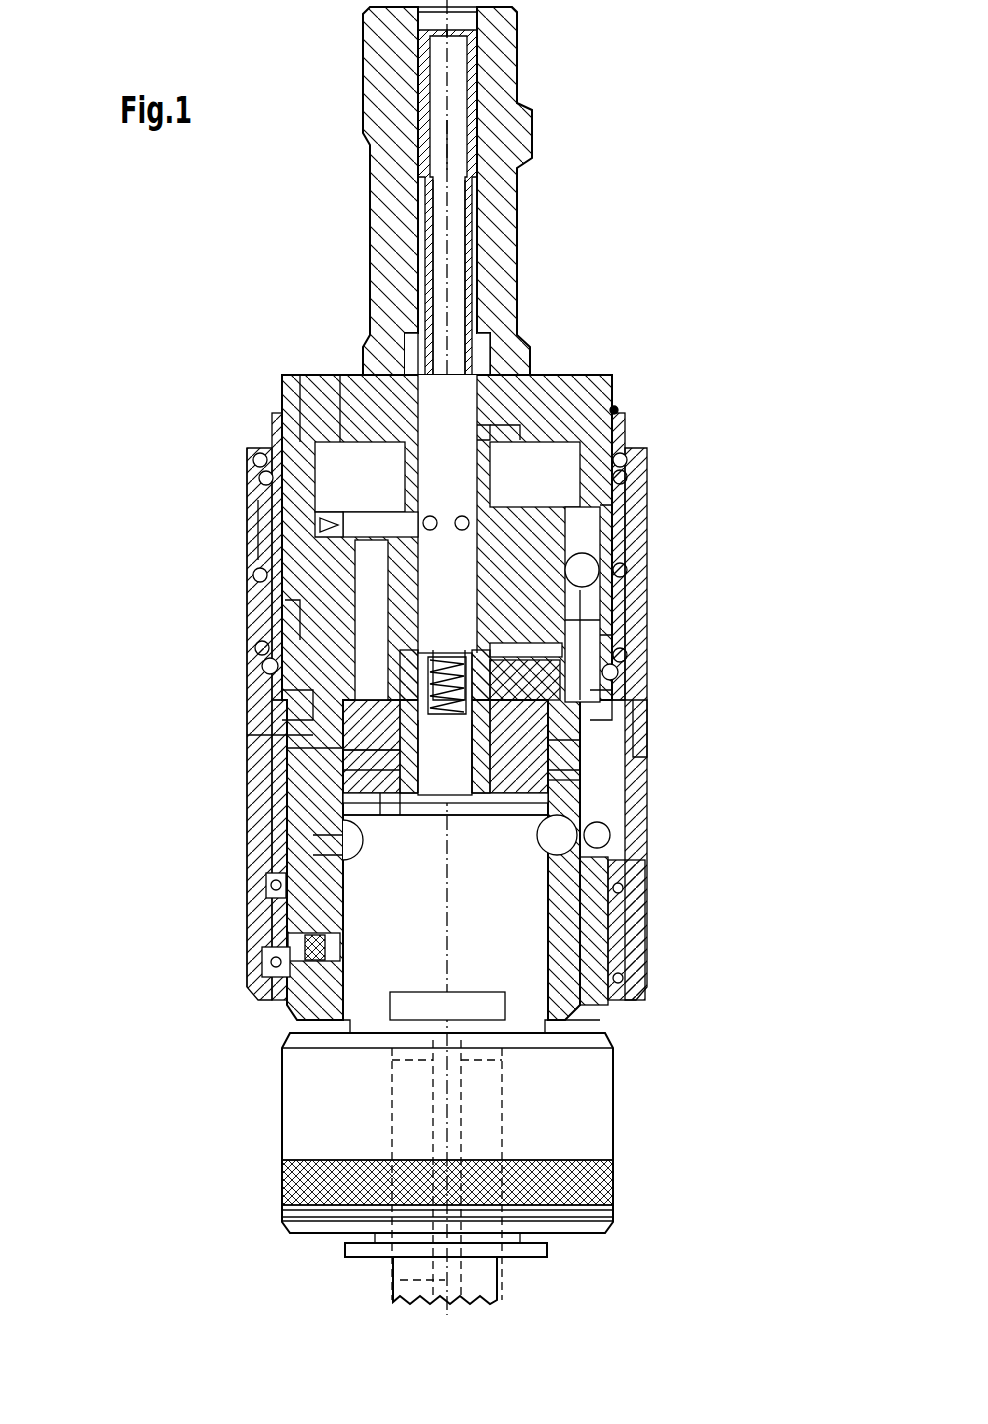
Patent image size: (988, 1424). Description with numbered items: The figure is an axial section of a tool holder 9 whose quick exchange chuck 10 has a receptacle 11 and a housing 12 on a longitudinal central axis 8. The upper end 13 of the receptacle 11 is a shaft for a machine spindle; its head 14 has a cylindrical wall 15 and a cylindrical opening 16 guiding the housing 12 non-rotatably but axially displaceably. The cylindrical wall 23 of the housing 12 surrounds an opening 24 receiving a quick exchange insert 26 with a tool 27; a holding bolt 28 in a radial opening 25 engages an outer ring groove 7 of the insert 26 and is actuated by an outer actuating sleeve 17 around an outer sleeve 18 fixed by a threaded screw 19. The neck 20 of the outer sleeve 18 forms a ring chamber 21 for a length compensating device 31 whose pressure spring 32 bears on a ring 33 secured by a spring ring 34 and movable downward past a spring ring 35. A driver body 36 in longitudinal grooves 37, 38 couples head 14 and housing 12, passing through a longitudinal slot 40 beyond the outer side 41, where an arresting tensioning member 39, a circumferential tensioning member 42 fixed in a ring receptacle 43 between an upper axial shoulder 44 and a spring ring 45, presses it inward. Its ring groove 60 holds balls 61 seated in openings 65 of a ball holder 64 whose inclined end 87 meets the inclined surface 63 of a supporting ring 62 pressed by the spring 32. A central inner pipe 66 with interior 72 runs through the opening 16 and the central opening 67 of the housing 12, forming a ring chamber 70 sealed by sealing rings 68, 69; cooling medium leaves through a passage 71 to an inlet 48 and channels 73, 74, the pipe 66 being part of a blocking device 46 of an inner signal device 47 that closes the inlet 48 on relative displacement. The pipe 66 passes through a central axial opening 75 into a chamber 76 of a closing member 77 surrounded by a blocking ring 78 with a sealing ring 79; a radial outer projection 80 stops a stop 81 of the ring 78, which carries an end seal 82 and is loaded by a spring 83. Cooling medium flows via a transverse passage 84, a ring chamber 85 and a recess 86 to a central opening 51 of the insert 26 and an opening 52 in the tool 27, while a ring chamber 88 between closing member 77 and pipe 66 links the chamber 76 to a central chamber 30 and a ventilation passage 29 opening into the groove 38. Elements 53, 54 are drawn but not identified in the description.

The outer ring groove 7 is at (255, 855).
The longitudinal central axis 8 is at (447, 145).
The tool holder 9 is at (333, 300).
The quick exchange chuck 10 is at (616, 372).
The receptacle 11 is at (615, 385).
The housing 12 is at (400, 527).
The upper end 13 is at (510, 95).
The head 14 is at (278, 440).
The cylindrical wall 15 is at (255, 730).
The inner coaxial cylindrical opening 16 is at (497, 432).
The outer actuating sleeve 17 is at (625, 955).
The outer sleeve 18 is at (595, 910).
The threaded screw 19 is at (262, 978).
The upper cylindrical neck 20 is at (257, 530).
The ring chamber 21 is at (268, 500).
The cylindrical wall 23 is at (288, 935).
The opening 24 is at (265, 890).
The radial opening 25 is at (570, 860).
The quick exchange insert 26 is at (532, 1060).
The tool 27 is at (498, 1290).
The holding bolt 28 is at (578, 835).
The ventilation passage 29 is at (525, 655).
The central chamber 30 is at (418, 645).
The axial length compensating device 31 is at (275, 599).
The pressure spring 32 is at (636, 455).
The ring 33 is at (618, 430).
The spring ring 34 is at (615, 412).
The spring ring 35 is at (258, 455).
The driver body 36 is at (612, 548).
The longitudinal groove 37 is at (588, 625).
The longitudinal groove 38 is at (602, 525).
The arresting tensioning member 39 is at (622, 640).
The longitudinal slot 40 is at (600, 605).
The outer side 41 is at (620, 505).
The circumferential tensioning member 42 is at (600, 572).
The ring receptacle 43 is at (260, 568).
The upper axial shoulder 44 is at (260, 478).
The spring ring 45 is at (265, 700).
The blocking device 46 is at (371, 618).
The inner signal device 47 is at (338, 488).
The inlet 48 is at (470, 523).
The central opening 51 is at (458, 1118).
The opening 52 is at (400, 1279).
The valve body 53 is at (547, 712).
The piston 54 is at (445, 721).
The ring groove 60 is at (265, 625).
The balls 61 is at (620, 705).
The supporting ring 62 is at (266, 650).
The inclined surface 63 is at (268, 668).
The ball holder 64 is at (630, 728).
The openings 65 is at (618, 690).
The central inner pipe 66 is at (468, 237).
The central opening 67 is at (357, 505).
The sealing ring 68 is at (485, 368).
The sealing ring 69 is at (497, 565).
The ring chamber 70 is at (472, 428).
The passage 71 is at (398, 516).
The interior 72 is at (455, 265).
The channel 73 is at (358, 525).
The channel 74 is at (275, 750).
The central axial opening 75 is at (515, 712).
The chamber 76 is at (500, 768).
The closing member 77 is at (540, 808).
The blocking ring 78 is at (560, 785).
The sealing ring 79 is at (552, 755).
The radial outer projection 80 is at (348, 842).
The stop 81 is at (340, 782).
The end seal 82 is at (340, 845).
The spring 83 is at (342, 792).
The transverse passage 84 is at (300, 745).
The ring chamber 85 is at (395, 820).
The recess 86 is at (400, 805).
The inclined end 87 is at (627, 662).
The ring chamber 88 is at (428, 680).